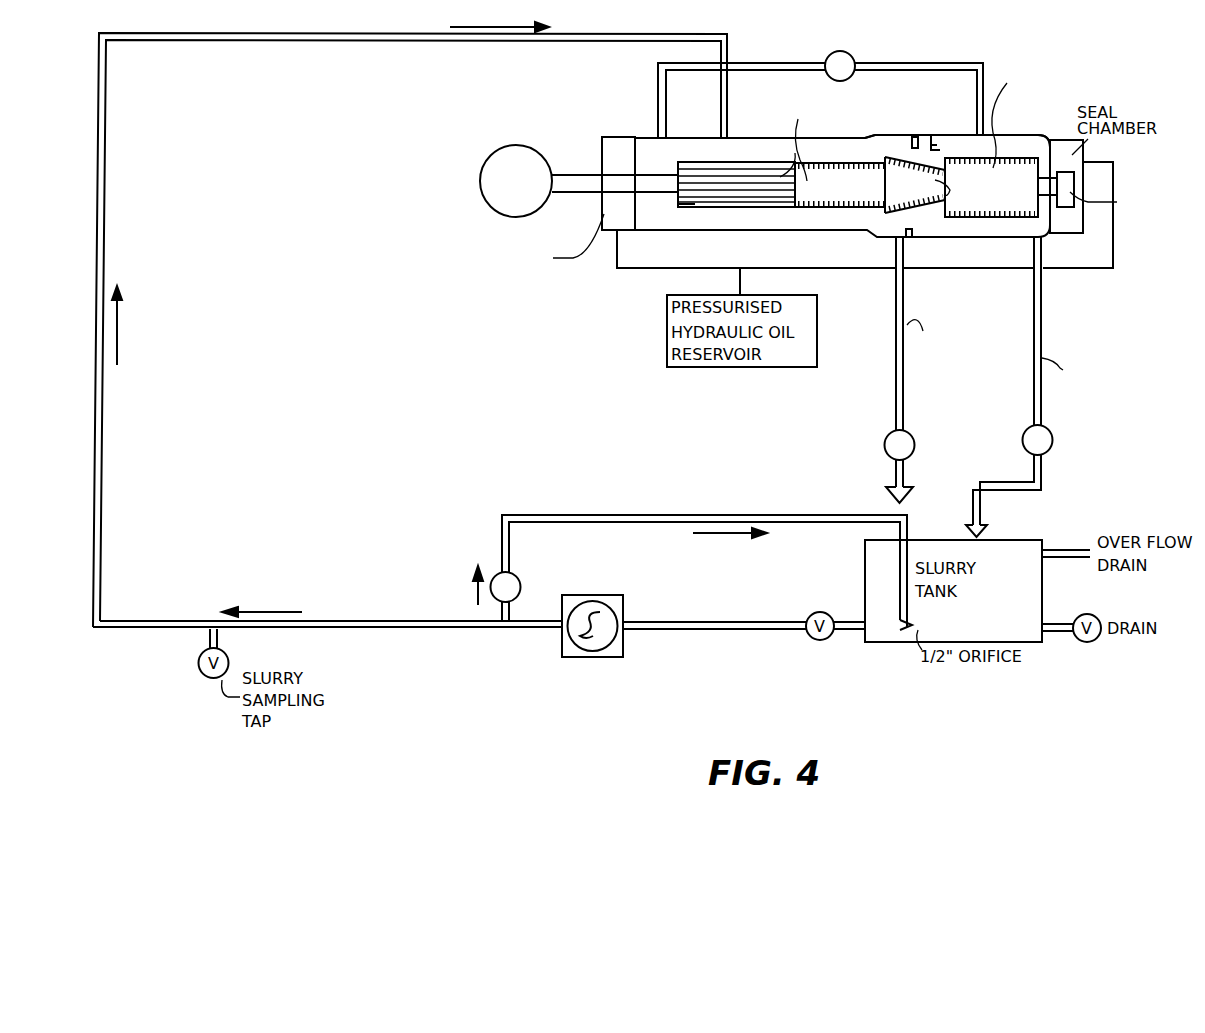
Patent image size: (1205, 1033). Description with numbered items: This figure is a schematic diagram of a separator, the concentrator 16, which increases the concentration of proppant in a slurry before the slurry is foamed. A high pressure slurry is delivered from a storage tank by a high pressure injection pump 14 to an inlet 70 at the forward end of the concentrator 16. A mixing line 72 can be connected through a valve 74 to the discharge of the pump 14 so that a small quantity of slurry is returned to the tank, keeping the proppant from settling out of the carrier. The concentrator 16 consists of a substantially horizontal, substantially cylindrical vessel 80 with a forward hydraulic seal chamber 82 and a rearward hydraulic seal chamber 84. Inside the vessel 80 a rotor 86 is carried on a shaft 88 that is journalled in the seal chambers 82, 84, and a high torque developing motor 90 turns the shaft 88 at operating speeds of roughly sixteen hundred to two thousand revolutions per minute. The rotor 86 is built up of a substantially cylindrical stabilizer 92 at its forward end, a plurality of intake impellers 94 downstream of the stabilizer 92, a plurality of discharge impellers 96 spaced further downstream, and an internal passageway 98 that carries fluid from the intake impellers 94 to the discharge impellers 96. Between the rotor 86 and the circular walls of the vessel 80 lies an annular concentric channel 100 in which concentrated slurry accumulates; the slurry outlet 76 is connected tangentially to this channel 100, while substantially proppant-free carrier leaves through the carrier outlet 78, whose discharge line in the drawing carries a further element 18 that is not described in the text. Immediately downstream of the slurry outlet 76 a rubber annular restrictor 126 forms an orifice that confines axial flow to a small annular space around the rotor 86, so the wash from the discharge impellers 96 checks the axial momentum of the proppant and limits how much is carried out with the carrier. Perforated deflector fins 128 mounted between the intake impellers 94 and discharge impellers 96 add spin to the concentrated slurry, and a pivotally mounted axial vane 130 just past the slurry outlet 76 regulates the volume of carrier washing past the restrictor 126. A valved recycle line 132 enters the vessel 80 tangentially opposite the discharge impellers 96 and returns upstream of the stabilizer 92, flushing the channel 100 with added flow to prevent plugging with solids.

The high pressure injection pump 14 is at (625, 616).
The concentrator 16 is at (1134, 80).
The fluid effluent valve 18 is at (1048, 452).
The inlet 70 is at (716, 136).
The mixing line 72 is at (755, 518).
The valve 74 is at (511, 590).
The slurry outlet 76 is at (914, 244).
The carrier outlet 78 is at (1047, 243).
The vessel 80 is at (1038, 134).
The forward hydraulic seal chamber 82 is at (600, 209).
The rearward hydraulic seal chamber 84 is at (1073, 222).
The rotor 86 is at (686, 212).
The shaft 88 is at (586, 174).
The motor 90 is at (480, 176).
The stabilizer 92 is at (768, 208).
The intake impellers 94 is at (840, 148).
The discharge impellers 96 is at (988, 219).
The internal passageway 98 is at (988, 128).
The annular concentric channel 100 is at (680, 152).
The rubber annular restrictor 126 is at (916, 137).
The deflector fins 128 is at (882, 161).
The axial vane 130 is at (937, 146).
The valved recycle line 132 is at (940, 62).